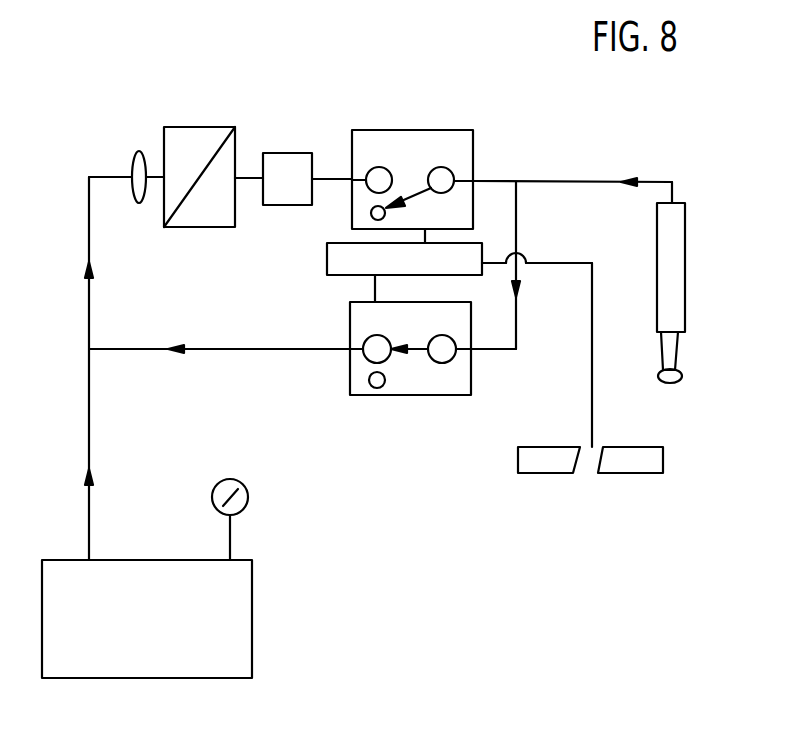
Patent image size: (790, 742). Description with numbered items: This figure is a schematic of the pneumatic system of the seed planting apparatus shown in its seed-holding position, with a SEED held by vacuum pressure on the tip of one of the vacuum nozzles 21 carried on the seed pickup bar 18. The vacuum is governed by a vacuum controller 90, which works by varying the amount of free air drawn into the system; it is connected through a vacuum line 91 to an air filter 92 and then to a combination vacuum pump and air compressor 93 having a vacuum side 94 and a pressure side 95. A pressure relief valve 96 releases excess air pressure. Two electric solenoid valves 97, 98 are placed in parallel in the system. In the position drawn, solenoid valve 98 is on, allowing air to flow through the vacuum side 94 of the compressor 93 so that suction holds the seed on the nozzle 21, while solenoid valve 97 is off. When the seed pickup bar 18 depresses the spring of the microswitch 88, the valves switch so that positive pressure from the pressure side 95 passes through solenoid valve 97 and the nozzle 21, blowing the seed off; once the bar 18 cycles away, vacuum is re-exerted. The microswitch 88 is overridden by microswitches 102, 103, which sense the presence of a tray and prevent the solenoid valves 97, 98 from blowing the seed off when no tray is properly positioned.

The seed pickup bar 18 is at (679, 285).
The vacuum nozzle 21 is at (672, 350).
The seed SEED is at (668, 379).
The microswitch 88 is at (338, 275).
The vacuum controller 90 is at (245, 628).
The vacuum line 91 is at (90, 385).
The air filter 92 is at (139, 151).
The combination vacuum pump and air compressor 93 is at (218, 127).
The vacuum side 94 is at (195, 128).
The pressure side 95 is at (223, 221).
The pressure relief valve 96 is at (298, 153).
The electric solenoid valve 97 is at (430, 143).
The electric solenoid valve 98 is at (428, 386).
The microswitch 102 is at (633, 469).
The microswitch 103 is at (532, 471).